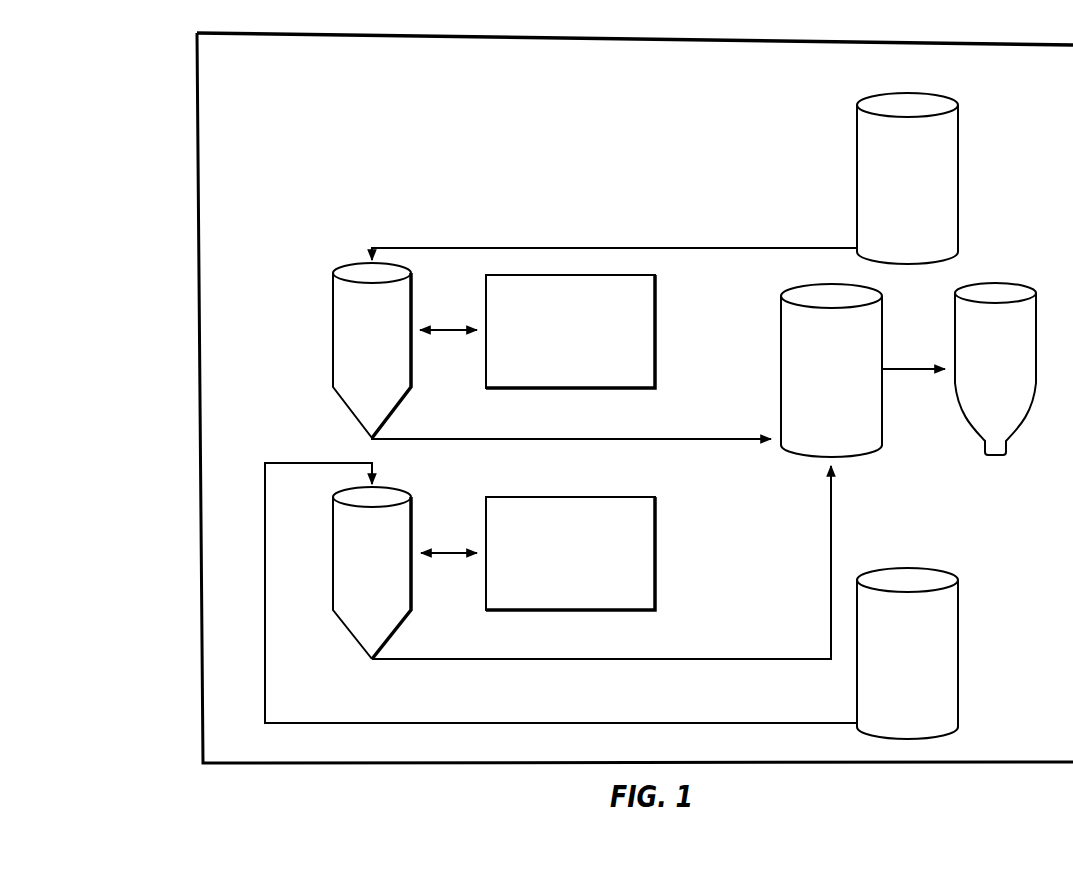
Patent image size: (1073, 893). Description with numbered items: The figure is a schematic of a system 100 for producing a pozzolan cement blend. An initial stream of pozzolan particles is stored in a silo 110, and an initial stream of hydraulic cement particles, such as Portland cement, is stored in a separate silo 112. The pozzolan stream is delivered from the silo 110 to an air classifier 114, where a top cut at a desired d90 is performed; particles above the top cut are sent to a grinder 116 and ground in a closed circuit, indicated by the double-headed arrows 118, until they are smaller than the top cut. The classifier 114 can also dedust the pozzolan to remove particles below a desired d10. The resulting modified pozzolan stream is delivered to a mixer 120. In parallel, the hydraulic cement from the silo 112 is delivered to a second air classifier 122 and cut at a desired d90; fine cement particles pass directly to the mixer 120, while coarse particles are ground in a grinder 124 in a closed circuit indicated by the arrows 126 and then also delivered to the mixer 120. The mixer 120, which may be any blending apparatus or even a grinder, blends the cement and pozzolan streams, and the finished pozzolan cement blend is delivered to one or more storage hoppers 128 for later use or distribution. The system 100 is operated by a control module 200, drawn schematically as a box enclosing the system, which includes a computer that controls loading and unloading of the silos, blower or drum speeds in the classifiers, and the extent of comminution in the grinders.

The control module 200 is at (197, 57).
The system 100 is at (318, 196).
The silo 110 is at (894, 192).
The silo 112 is at (894, 666).
The air classifier 114 is at (358, 339).
The grinder 116 is at (557, 339).
The arrows 118 is at (450, 330).
The mixer 120 is at (817, 384).
The air classifier 122 is at (358, 562).
The grinder 124 is at (557, 561).
The arrows 126 is at (452, 553).
The storage hoppers 128 is at (981, 351).